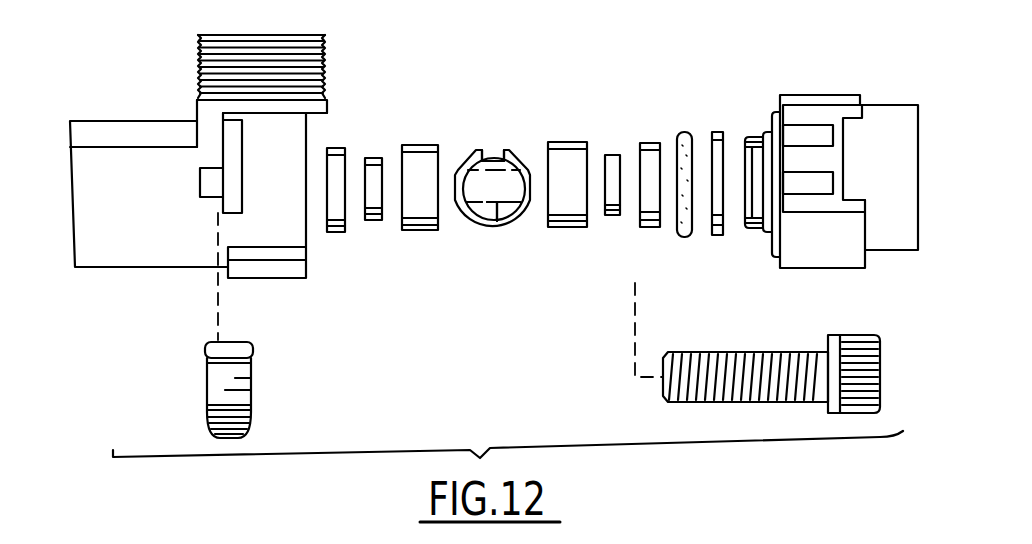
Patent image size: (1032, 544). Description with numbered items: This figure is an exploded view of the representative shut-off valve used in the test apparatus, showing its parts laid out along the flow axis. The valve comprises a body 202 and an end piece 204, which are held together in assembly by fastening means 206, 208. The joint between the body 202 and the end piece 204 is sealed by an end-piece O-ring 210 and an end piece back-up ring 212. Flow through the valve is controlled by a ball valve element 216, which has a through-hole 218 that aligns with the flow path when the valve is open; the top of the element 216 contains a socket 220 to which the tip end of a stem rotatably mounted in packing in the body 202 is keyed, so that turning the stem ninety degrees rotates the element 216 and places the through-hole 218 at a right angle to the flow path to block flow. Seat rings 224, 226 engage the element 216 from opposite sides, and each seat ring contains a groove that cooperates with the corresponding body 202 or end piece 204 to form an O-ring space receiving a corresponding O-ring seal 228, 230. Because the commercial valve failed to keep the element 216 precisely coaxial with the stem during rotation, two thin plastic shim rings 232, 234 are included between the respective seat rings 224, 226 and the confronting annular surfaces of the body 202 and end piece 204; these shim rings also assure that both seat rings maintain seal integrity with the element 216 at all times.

The body 202 is at (122, 130).
The end piece 204 is at (880, 110).
The fastening means 206 is at (767, 332).
The fastening means 208 is at (210, 378).
The end-piece O-ring 210 is at (683, 132).
The end piece back-up ring 212 is at (718, 132).
The ball valve element 216 is at (475, 225).
The through-hole 218 is at (502, 242).
The socket 220 is at (488, 152).
The seat ring 224 is at (408, 145).
The seat ring 226 is at (557, 142).
The O-ring seal 228 is at (377, 157).
The O-ring seal 230 is at (607, 155).
The shim ring 232 is at (333, 147).
The shim ring 234 is at (648, 143).